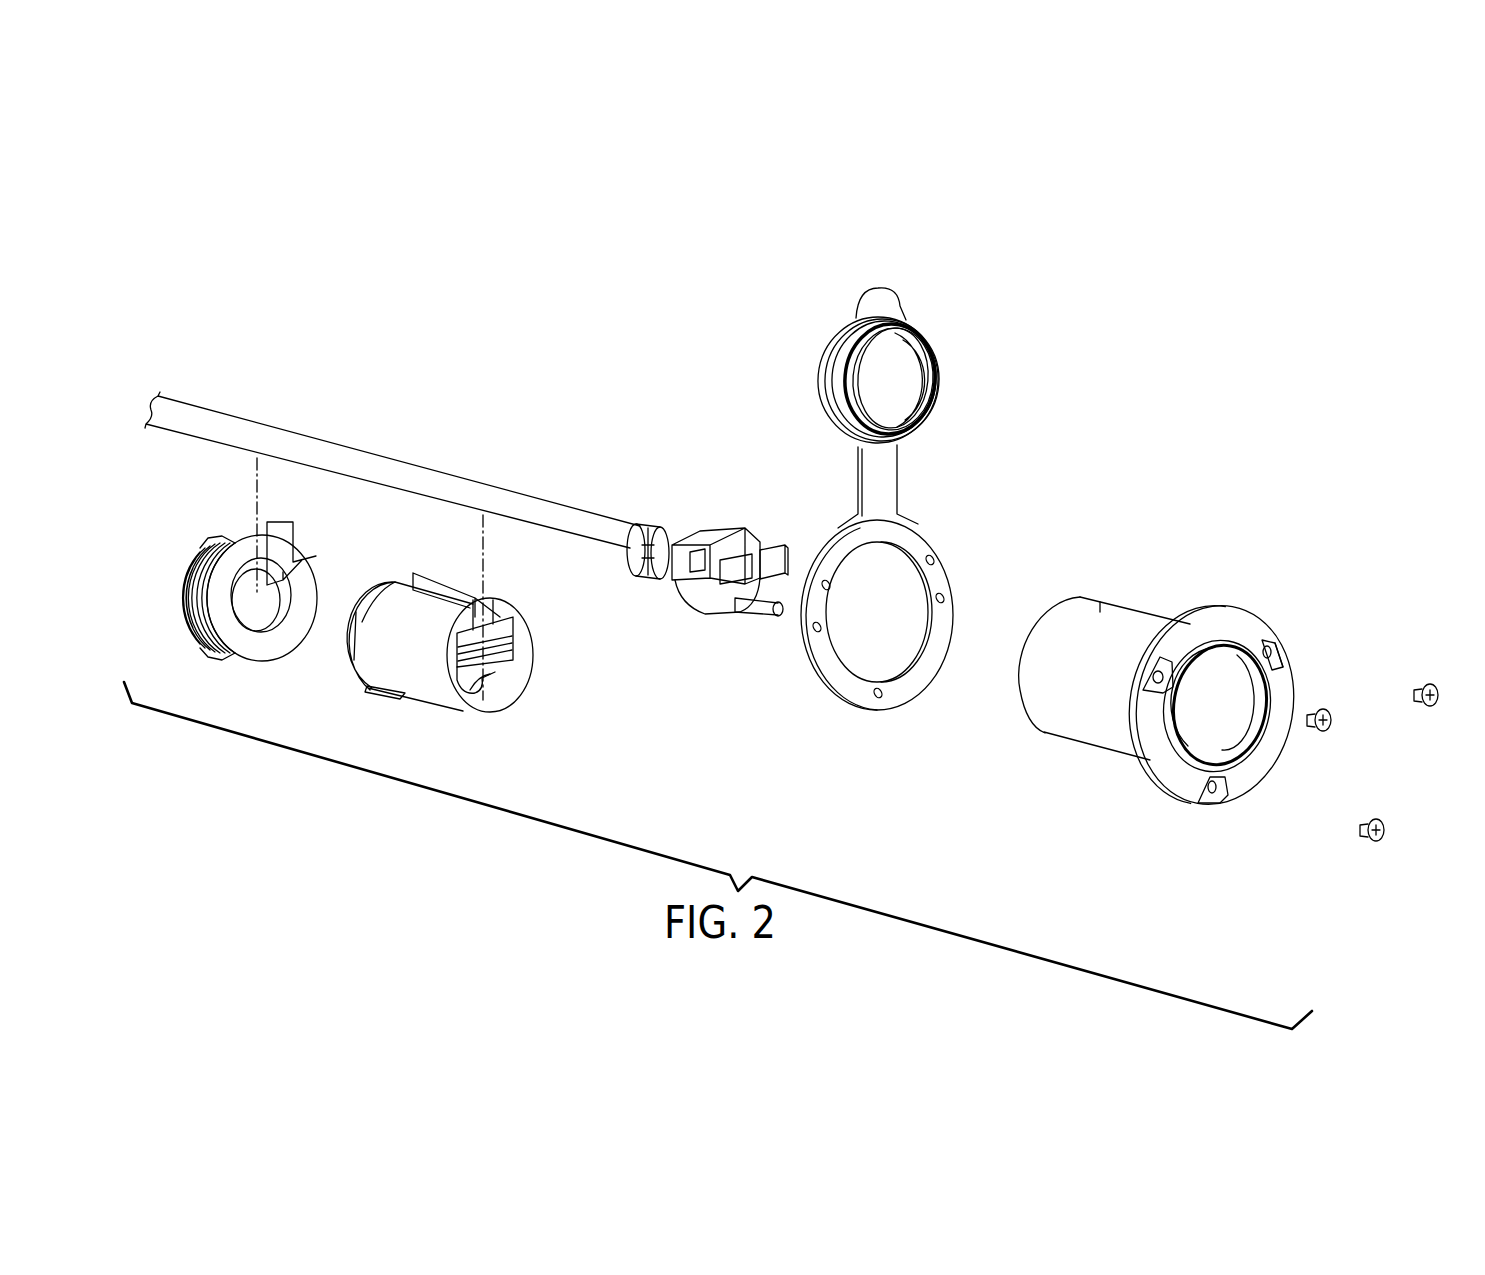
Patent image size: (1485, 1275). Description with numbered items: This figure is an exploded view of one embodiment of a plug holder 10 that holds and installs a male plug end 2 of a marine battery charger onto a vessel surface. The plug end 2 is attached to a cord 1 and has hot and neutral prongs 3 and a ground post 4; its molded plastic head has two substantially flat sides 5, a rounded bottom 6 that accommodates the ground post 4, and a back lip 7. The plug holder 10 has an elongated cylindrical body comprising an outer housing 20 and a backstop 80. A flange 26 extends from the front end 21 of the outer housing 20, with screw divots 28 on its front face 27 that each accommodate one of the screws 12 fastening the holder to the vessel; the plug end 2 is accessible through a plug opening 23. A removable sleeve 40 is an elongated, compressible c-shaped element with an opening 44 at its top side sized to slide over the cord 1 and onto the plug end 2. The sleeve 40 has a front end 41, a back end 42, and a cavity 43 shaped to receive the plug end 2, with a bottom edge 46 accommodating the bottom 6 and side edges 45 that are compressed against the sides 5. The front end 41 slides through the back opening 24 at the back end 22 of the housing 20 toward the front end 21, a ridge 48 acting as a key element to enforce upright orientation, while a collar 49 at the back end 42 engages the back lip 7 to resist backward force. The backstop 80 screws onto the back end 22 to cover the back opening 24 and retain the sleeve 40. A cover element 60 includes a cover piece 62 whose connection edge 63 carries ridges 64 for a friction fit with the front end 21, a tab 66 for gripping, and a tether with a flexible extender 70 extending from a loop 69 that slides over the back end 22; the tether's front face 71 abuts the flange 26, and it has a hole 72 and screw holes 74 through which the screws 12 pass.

The cord 1 is at (400, 460).
The male plug end 2 is at (705, 572).
The hot and neutral prongs 3 is at (745, 568).
The ground post 4 is at (762, 610).
The flat sides 5 is at (690, 565).
The rounded bottom 6 is at (710, 610).
The back lip 7 is at (632, 555).
The plug holder 10 is at (1125, 400).
The screws 12 is at (1418, 700).
The outer housing 20 is at (1104, 667).
The front end 21 is at (1272, 685).
The back end 22 is at (1066, 602).
The plug opening 23 is at (1236, 732).
The back opening 24 is at (1165, 688).
The flange 26 is at (1234, 692).
The front face 27 is at (1240, 628).
The screw divots 28 is at (1278, 650).
The removable sleeve 40 is at (425, 682).
The front end 41 is at (500, 618).
The back end 42 is at (366, 590).
The cavity 43 is at (480, 680).
The opening 44 is at (432, 576).
The side edges 45 is at (510, 643).
The bottom edge 46 is at (500, 692).
The ridge 48 is at (380, 692).
The collar 49 is at (348, 640).
The cover element 60 is at (905, 497).
The cover piece 62 is at (890, 375).
The connection edge 63 is at (922, 360).
The ridges 64 is at (908, 328).
The tab 66 is at (880, 300).
The loop 69 is at (945, 580).
The flexible extender 70 is at (905, 610).
The front face 71 is at (918, 662).
The hole 72 is at (936, 600).
The screw holes 74 is at (928, 563).
The backstop 80 is at (245, 655).